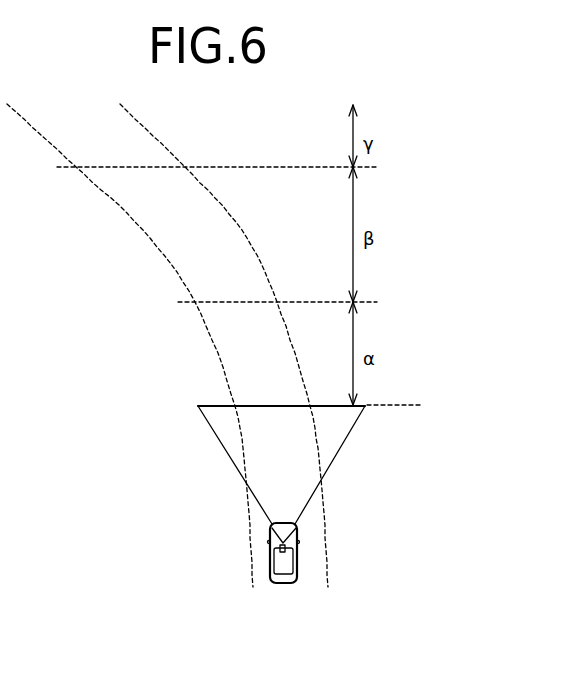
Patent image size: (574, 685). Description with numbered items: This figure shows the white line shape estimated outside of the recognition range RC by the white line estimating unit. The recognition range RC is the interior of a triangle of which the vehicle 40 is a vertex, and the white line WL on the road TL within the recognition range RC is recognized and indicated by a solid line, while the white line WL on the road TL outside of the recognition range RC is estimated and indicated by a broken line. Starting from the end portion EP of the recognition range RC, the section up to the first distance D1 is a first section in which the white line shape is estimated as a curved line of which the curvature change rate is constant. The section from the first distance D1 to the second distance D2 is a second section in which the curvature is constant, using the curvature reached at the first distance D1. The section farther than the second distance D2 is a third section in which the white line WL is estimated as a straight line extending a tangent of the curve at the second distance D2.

The white line WL is at (233, 422).
The recognition range RC is at (308, 497).
The road TL is at (280, 467).
The end portion of recognition range EP is at (323, 406).
The first distance D1 is at (293, 303).
The second distance D2 is at (233, 169).
The vehicle 40 is at (282, 585).